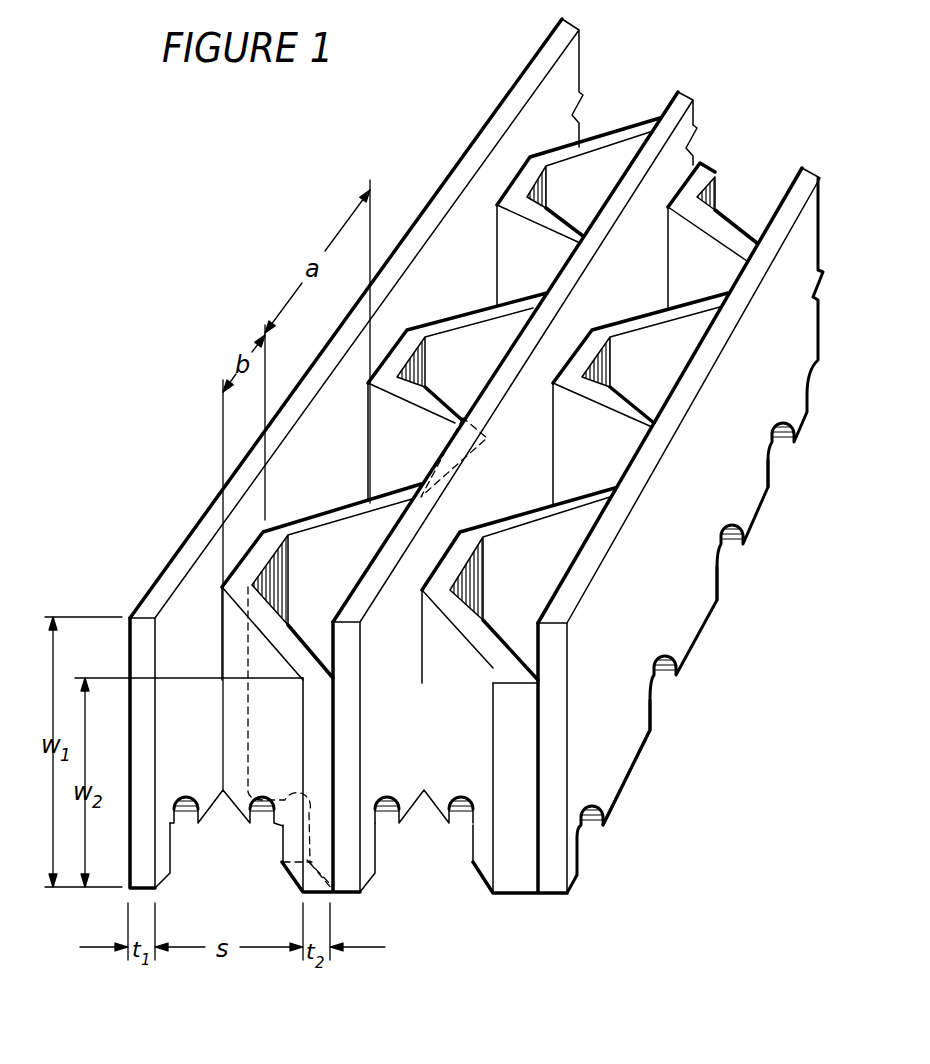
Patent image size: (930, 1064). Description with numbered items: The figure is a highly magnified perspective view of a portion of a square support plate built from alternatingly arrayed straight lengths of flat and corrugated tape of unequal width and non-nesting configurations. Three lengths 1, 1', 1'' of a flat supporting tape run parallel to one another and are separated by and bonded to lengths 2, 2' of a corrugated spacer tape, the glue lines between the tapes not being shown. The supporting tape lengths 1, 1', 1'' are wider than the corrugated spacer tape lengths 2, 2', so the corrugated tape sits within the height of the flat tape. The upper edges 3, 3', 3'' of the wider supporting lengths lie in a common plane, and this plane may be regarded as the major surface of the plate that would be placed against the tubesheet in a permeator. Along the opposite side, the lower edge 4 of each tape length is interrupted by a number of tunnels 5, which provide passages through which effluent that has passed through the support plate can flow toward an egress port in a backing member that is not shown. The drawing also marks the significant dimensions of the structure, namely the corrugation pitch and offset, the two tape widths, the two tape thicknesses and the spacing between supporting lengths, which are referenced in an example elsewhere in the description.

The supporting tape length 1 is at (154, 702).
The supporting tape length 1' is at (329, 776).
The supporting tape length 1'' is at (648, 556).
The corrugated spacer tape length 2 is at (441, 503).
The corrugated spacer tape length 2' is at (589, 423).
The upper edge 3 is at (356, 318).
The upper edge 3' is at (515, 350).
The upper edge 3'' is at (679, 384).
The lower edge 4 is at (265, 827).
The tunnels 5 is at (718, 568).